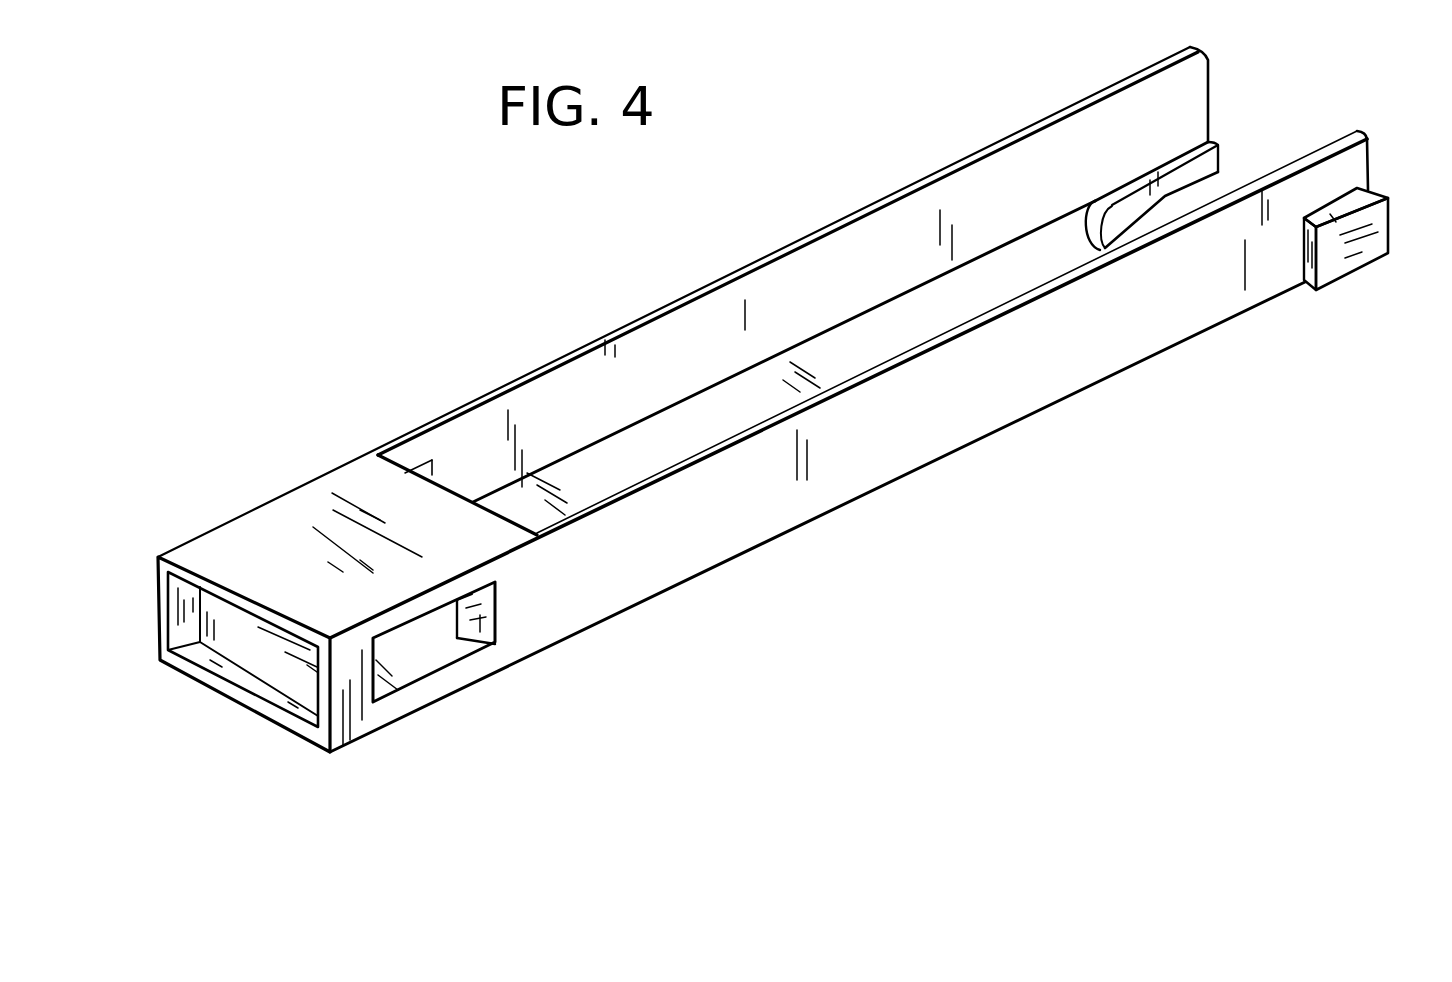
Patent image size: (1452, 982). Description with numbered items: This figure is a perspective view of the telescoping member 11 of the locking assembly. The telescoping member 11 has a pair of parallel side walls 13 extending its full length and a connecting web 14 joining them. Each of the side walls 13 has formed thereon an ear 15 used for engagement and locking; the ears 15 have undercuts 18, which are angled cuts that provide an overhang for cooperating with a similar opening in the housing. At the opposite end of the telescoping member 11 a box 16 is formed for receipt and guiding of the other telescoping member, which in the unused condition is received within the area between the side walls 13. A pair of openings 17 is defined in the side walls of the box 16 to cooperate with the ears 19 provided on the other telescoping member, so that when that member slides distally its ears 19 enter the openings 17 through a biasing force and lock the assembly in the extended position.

The telescoping member 11 is at (1121, 381).
The side walls 13 is at (737, 323).
The connecting web 14 is at (1055, 255).
The ear 15 is at (1371, 258).
The box 16 is at (237, 541).
The openings 17 is at (400, 680).
The undercuts 18 is at (1303, 268).
The ears 19 is at (482, 648).